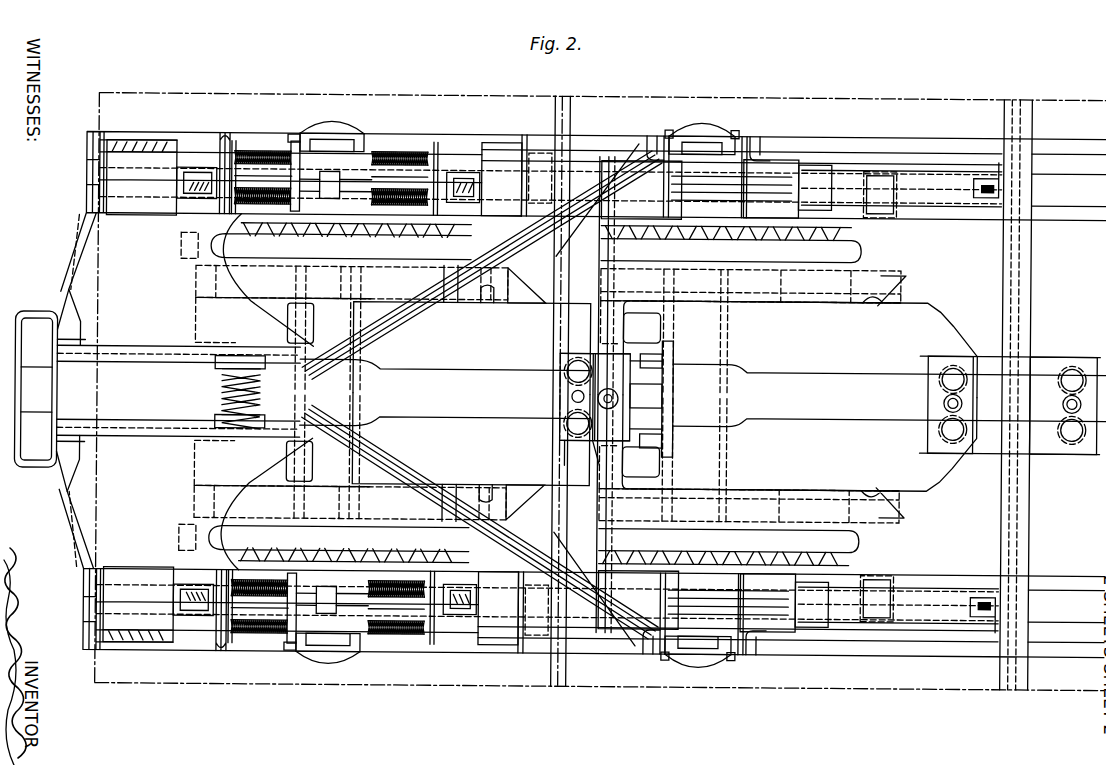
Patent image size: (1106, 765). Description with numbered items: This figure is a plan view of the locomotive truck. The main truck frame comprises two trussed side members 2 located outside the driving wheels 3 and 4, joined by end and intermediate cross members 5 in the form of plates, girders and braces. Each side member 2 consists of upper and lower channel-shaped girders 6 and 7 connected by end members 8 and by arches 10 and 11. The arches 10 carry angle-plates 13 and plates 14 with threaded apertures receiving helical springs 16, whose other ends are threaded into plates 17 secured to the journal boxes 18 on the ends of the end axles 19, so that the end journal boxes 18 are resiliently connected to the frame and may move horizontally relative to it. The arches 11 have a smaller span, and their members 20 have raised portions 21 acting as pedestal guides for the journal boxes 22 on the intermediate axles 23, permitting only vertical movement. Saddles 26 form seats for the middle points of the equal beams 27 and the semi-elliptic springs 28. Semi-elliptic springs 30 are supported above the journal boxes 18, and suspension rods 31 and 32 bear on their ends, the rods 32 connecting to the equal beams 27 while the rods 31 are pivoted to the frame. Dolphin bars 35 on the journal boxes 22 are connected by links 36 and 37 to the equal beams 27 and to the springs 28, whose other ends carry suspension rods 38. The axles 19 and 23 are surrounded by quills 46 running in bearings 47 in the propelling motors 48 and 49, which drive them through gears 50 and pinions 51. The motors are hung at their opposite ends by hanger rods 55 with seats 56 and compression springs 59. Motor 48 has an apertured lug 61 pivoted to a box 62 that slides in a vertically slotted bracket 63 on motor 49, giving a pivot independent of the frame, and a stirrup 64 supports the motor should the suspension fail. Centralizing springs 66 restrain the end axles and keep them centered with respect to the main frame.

The trussed side members 2 is at (120, 145).
The driving wheels 3 is at (180, 247).
The driving wheels 4 is at (843, 255).
The cross members 5 is at (553, 273).
The upper channel-shaped girders 6 is at (495, 160).
The lower channel-shaped girders 7 is at (522, 160).
The end members 8 is at (70, 510).
The arches 10 is at (221, 140).
The arches 11 is at (762, 170).
The angle-plates 13 is at (232, 145).
The plates 14 is at (290, 140).
The helical springs 16 is at (285, 150).
The plates 17 is at (290, 135).
The journal boxes 18 is at (327, 124).
The axles 19 is at (351, 383).
The members 20 is at (650, 140).
The raised portions 21 is at (664, 155).
The journal boxes 22 is at (700, 127).
The axles 23 is at (730, 353).
The saddles 26 is at (880, 212).
The equal beams 27 is at (505, 215).
The semi-elliptic springs 28 is at (840, 175).
The semi-elliptic springs 30 is at (330, 180).
The suspension rods 31 is at (185, 190).
The suspension rods 32 is at (460, 175).
The dolphin bars 35 is at (712, 185).
The links 36 is at (603, 160).
The links 37 is at (808, 170).
The suspension rods 38 is at (982, 188).
The quills 46 is at (355, 403).
The bearings 47 is at (315, 305).
The propelling motor 48 is at (471, 394).
The propelling motor 49 is at (799, 396).
The gears 50 is at (195, 280).
The pinions 51 is at (488, 302).
The hanger rods 55 is at (572, 393).
The seats 56 is at (560, 343).
The helical compression springs 59 is at (567, 366).
The apertured lug 61 is at (570, 450).
The box 62 is at (635, 355).
The vertically slotted bracket 63 is at (662, 430).
The stirrup 64 is at (662, 398).
The centralizing springs 66 is at (222, 390).